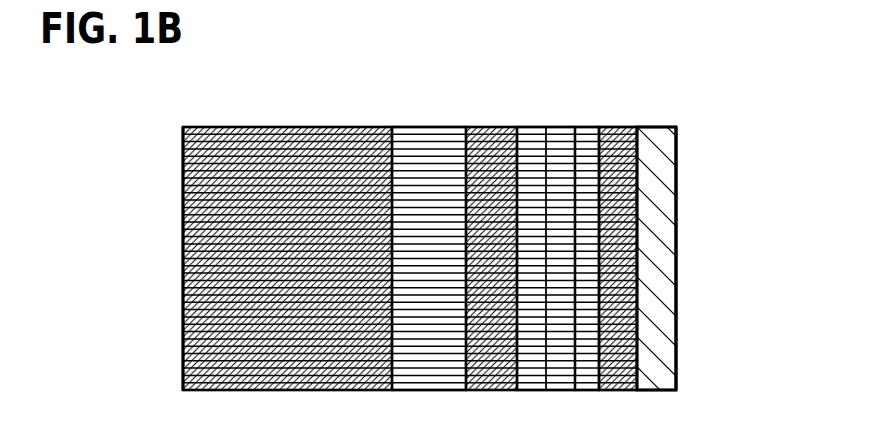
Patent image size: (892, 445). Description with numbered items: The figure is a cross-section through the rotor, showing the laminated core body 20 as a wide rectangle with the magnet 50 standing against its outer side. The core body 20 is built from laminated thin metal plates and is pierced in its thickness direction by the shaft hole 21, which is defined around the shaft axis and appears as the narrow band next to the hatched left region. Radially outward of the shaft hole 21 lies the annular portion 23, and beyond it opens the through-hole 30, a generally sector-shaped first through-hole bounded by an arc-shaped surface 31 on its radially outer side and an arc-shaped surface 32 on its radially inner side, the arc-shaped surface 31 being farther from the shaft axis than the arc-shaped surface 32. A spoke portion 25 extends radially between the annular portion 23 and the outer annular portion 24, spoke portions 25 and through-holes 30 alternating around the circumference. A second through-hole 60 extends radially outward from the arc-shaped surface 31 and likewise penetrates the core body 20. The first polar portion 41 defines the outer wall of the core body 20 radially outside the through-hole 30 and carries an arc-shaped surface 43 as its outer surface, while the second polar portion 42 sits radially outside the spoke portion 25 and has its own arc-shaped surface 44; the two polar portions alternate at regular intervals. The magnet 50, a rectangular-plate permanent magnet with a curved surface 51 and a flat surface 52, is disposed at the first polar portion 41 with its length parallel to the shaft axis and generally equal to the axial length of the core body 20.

The core body 20 is at (357, 127).
The shaft hole 21 is at (393, 150).
The annular portion 23 is at (494, 391).
The annular portion 24 is at (623, 391).
The spoke portion 25 is at (308, 391).
The through-hole 30 is at (543, 142).
The arc-shaped surface 31 is at (572, 157).
The arc-shaped surface 32 is at (527, 157).
The first polar portion 41 is at (673, 228).
The second polar portion 42 is at (182, 228).
The arc-shaped surface 43 is at (677, 262).
The arc-shaped surface 44 is at (182, 263).
The magnet 50 is at (673, 143).
The curved surface 51 is at (676, 180).
The flat surface 52 is at (632, 142).
The through-hole 60 is at (597, 142).